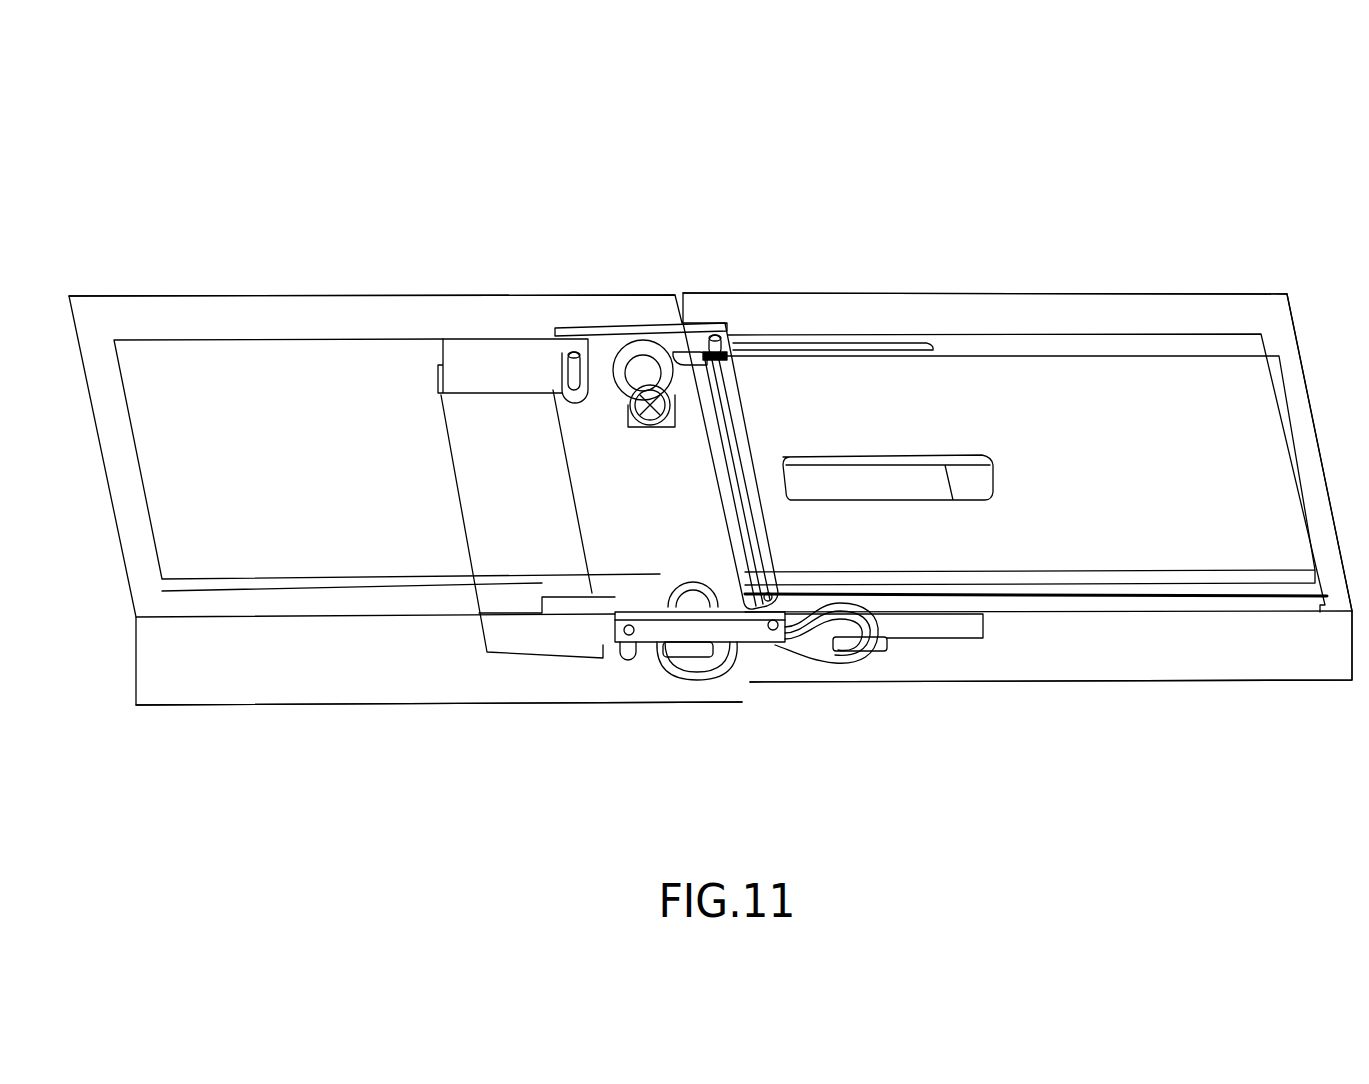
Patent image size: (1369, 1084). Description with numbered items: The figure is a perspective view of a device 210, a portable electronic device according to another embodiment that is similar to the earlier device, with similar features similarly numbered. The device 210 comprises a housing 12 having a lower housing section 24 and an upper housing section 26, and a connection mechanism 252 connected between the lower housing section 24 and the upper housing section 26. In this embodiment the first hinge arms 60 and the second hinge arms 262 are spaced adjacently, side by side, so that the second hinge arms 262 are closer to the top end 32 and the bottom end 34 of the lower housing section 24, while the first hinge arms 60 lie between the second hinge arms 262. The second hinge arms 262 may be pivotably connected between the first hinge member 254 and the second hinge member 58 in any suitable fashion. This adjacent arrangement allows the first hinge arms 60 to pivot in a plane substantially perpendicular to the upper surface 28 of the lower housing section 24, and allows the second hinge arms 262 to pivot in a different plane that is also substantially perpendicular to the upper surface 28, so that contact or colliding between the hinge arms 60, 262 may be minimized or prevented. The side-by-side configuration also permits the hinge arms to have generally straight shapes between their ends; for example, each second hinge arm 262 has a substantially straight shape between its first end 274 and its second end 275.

The device 210 is at (701, 434).
The connection mechanism 252 is at (685, 464).
The top end 32 is at (184, 310).
The upper surface 28 is at (153, 499).
The first hinge member 254 is at (461, 493).
The lower housing section 24 is at (208, 669).
The bottom end 34 is at (317, 669).
The first end 274 is at (568, 353).
The second hinge arms 262 is at (603, 347).
The housing 12 is at (738, 645).
The second end 275 is at (712, 335).
The first hinge arms 60 is at (730, 372).
The second hinge member 58 is at (958, 623).
The upper housing section 26 is at (1328, 665).